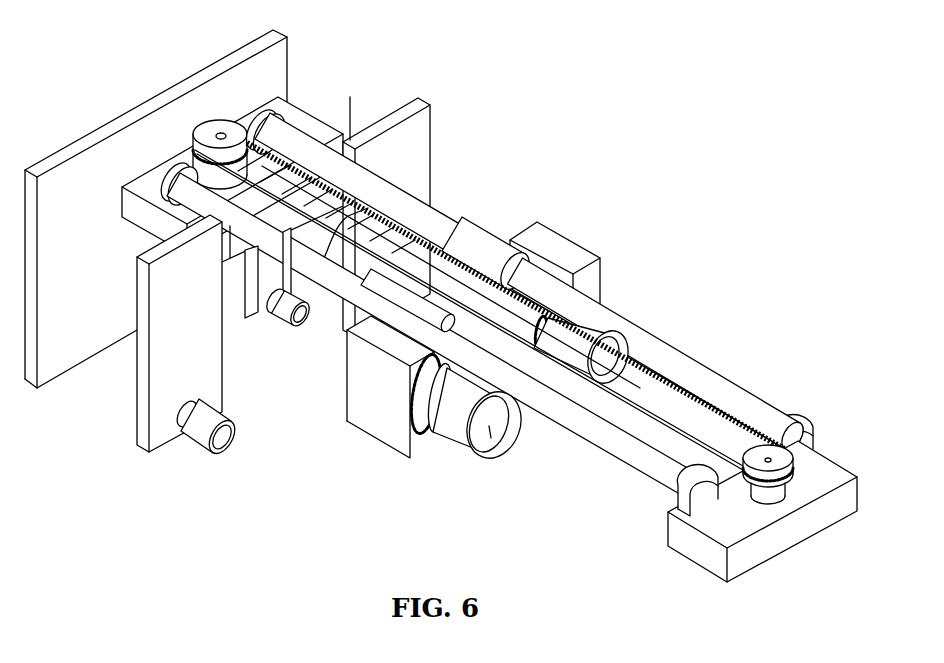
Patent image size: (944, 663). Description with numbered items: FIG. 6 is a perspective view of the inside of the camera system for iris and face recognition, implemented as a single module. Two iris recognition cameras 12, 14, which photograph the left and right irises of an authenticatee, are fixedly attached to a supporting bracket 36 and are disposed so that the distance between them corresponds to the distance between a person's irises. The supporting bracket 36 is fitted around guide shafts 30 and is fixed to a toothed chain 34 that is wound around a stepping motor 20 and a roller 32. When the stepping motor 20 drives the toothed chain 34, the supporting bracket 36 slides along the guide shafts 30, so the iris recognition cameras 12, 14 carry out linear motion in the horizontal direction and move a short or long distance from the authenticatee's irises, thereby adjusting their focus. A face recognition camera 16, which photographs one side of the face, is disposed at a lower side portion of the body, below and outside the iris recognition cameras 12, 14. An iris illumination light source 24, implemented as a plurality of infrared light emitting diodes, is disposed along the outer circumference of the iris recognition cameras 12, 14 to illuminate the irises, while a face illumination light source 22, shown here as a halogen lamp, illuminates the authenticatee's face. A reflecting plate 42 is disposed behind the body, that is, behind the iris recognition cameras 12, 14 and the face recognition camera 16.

The iris recognition camera 12 is at (490, 428).
The iris recognition camera 14 is at (604, 353).
The face recognition camera 16 is at (205, 437).
The stepping motor 20 is at (208, 128).
The face illumination light source 22 is at (280, 328).
The iris illumination light source 24 is at (412, 456).
The guide shafts 30 is at (421, 216).
The roller 32 is at (777, 454).
The toothed chain 34 is at (681, 408).
The supporting bracket 36 is at (487, 246).
The reflecting plate 42 is at (108, 130).